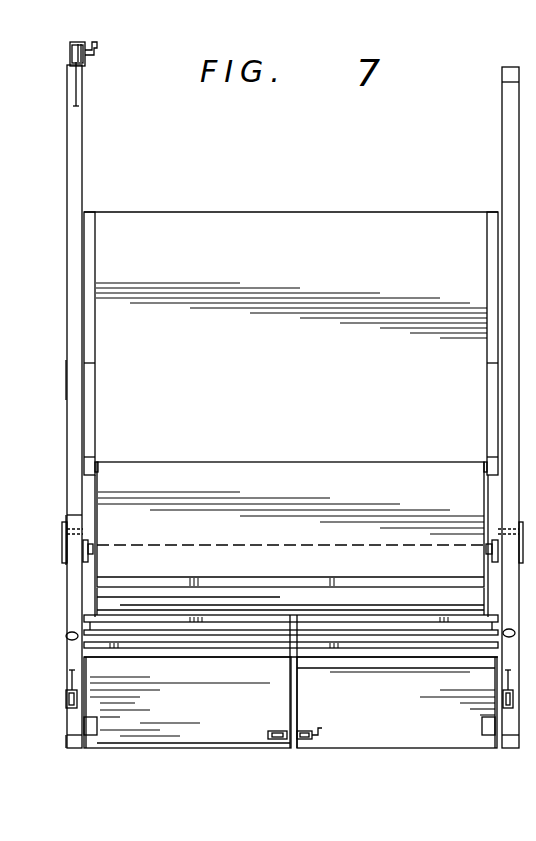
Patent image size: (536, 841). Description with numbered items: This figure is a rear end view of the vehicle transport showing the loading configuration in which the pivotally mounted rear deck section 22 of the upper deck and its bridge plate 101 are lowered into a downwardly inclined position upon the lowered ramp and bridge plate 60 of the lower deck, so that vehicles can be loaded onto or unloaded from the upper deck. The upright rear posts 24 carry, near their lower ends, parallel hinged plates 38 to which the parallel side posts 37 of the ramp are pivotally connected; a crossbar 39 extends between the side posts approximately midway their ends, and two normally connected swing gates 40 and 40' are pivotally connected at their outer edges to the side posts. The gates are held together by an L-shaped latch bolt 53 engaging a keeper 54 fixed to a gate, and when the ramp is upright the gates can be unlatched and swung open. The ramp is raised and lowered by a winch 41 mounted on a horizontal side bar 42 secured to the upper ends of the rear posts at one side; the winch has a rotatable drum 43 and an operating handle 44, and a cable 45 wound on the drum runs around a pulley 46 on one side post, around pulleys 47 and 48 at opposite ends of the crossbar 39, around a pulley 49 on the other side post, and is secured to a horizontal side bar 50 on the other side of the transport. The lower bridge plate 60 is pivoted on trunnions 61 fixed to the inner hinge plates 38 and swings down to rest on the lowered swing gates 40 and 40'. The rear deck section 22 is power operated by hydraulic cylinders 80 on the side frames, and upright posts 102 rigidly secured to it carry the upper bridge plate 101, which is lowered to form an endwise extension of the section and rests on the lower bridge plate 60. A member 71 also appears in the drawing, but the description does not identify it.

The rear deck section 22 is at (288, 235).
The rear posts 24 is at (66, 431).
The side post 37 is at (70, 692).
The hinged plates 38 is at (62, 552).
The crossbar 39 is at (236, 645).
The swing gate 40 is at (187, 716).
The swing gate 40' is at (397, 716).
The winch 41 is at (66, 42).
The horizontal side bar 42 is at (84, 78).
The drum 43 is at (80, 44).
The operating handle 44 is at (100, 50).
The cable 45 is at (74, 97).
The pulley 46 is at (66, 706).
The pulley 47 is at (66, 637).
The pulley 48 is at (514, 633).
The pulley 49 is at (510, 690).
The horizontal side bar 50 is at (505, 82).
The L-shaped latch bolt 53 is at (316, 732).
The keeper 54 is at (276, 731).
The bridge plate 60 is at (216, 592).
The trunnions 61 is at (92, 548).
The side member 71 is at (33, 380).
The hydraulic cylinders 80 is at (0, 530).
The bridge plate 101 is at (300, 470).
The upright posts 102 is at (88, 423).